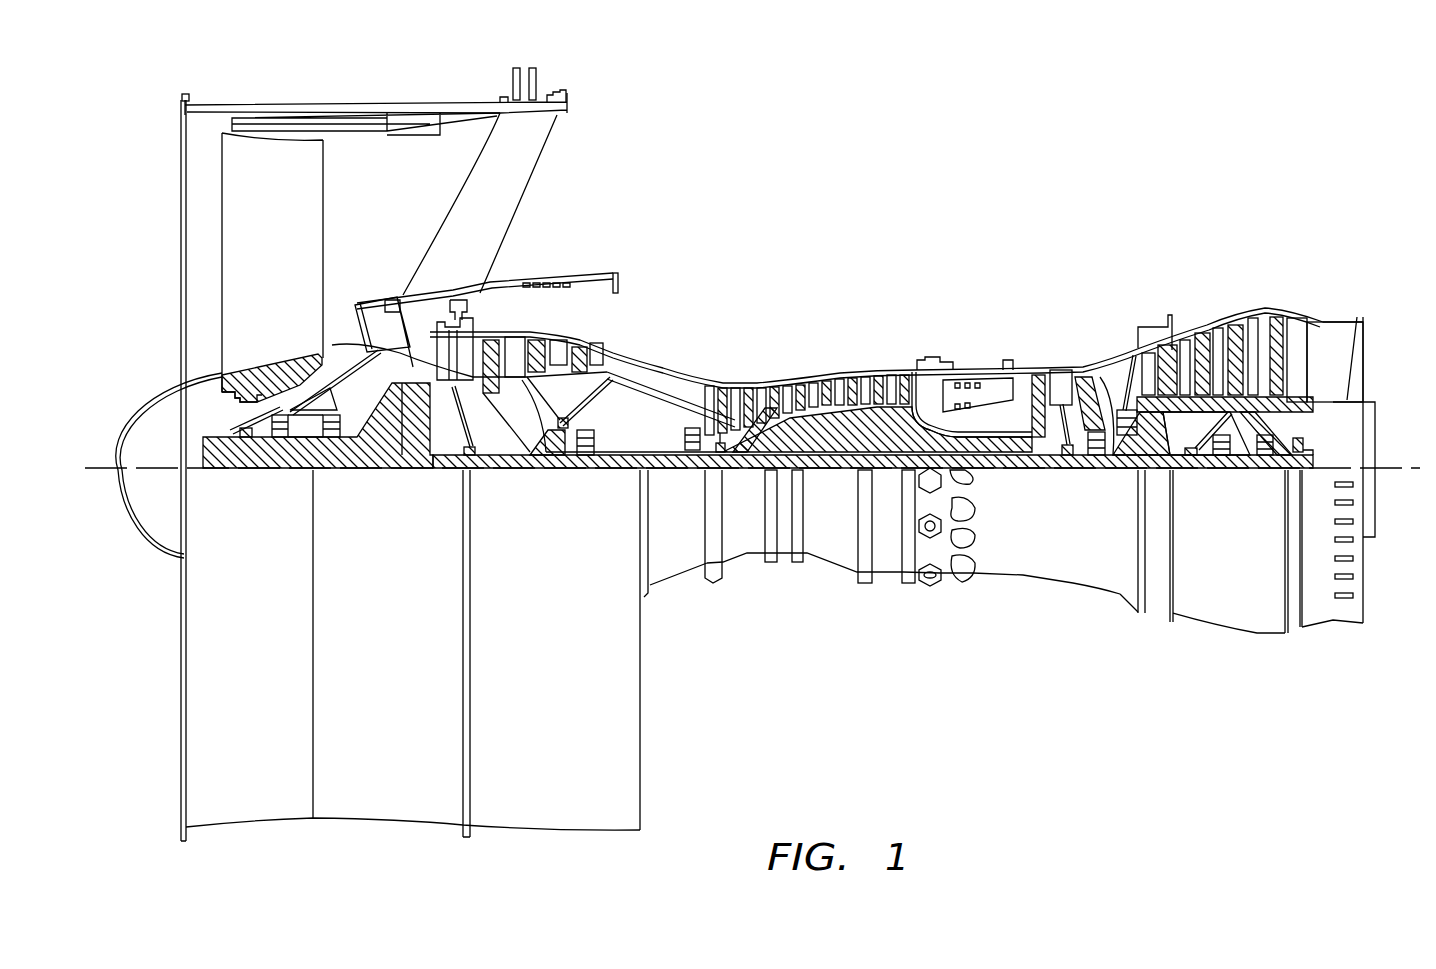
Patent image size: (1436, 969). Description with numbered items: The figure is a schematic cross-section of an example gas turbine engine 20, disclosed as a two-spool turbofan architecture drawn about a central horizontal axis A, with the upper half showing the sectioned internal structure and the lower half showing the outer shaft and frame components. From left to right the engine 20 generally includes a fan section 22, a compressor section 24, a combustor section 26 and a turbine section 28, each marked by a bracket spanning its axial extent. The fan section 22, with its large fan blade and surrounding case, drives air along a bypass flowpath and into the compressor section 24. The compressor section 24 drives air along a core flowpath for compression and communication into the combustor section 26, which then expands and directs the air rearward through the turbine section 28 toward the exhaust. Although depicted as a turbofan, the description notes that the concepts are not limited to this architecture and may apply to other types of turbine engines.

The gas turbine engine 20 is at (1100, 168).
The fan section 22 is at (175, 82).
The compressor section 24 is at (475, 237).
The combustor section 26 is at (915, 237).
The turbine section 28 is at (1295, 237).
The engine central longitudinal axis A is at (1395, 470).